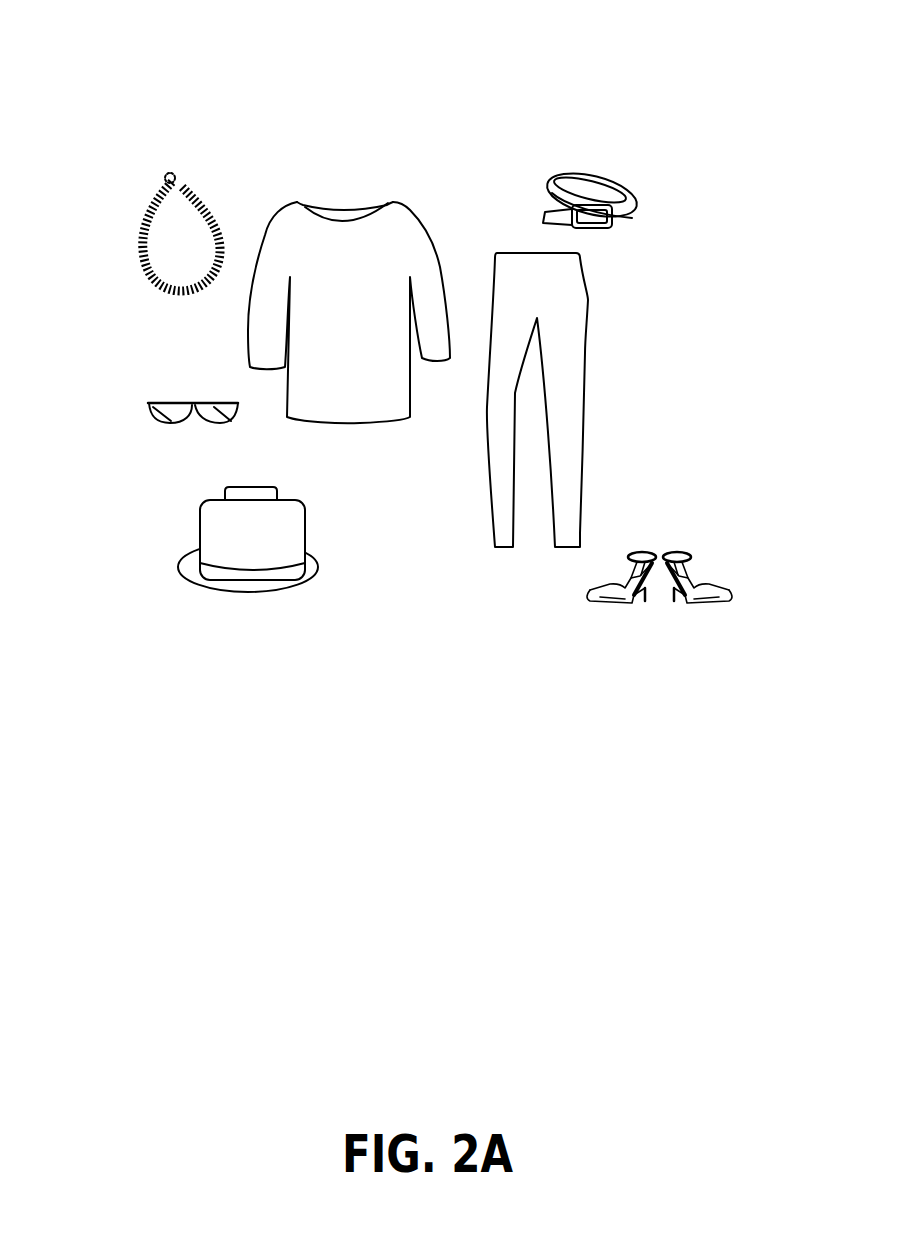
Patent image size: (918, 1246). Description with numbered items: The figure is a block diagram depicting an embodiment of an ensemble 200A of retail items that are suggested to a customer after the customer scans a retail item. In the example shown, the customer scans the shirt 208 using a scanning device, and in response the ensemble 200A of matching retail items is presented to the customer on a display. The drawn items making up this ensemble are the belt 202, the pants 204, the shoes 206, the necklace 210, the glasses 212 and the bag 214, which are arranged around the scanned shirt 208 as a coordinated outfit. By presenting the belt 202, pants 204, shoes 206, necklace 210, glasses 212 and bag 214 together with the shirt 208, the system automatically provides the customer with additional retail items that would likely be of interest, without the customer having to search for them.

The ensemble 200A is at (107, 45).
The belt 202 is at (640, 195).
The pants 204 is at (587, 350).
The shoes 206 is at (687, 572).
The shirt 208 is at (417, 208).
The necklace 210 is at (217, 212).
The glasses 212 is at (148, 403).
The bag 214 is at (178, 550).